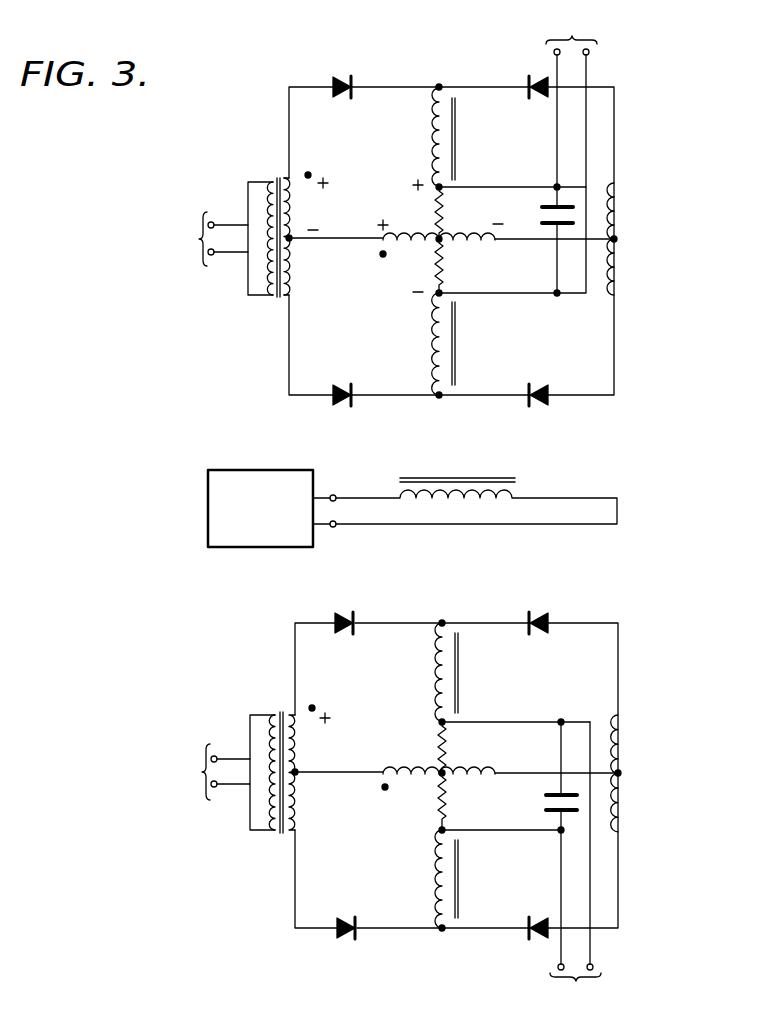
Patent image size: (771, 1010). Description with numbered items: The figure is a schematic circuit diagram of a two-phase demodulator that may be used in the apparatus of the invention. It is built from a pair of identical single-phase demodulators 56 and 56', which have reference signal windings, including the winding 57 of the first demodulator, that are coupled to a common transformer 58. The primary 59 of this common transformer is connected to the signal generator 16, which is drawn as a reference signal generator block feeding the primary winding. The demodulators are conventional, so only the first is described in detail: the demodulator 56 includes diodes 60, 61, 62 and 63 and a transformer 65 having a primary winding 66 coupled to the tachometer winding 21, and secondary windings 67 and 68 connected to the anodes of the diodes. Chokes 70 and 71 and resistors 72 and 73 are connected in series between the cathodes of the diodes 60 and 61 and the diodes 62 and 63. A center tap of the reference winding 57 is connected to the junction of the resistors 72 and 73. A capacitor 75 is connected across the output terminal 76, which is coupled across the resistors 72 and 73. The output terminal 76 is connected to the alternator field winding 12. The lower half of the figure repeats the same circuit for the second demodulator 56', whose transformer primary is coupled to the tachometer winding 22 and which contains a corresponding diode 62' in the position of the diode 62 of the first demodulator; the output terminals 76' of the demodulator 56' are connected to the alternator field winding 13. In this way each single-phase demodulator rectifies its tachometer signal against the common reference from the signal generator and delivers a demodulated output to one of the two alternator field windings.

The single-phase demodulator 56 is at (409, 241).
The single-phase demodulator 56' is at (411, 788).
The reference signal winding 57 is at (430, 239).
The common transformer 58 is at (523, 480).
The primary 59 is at (523, 491).
The diode 60 is at (344, 77).
The diode 61 is at (541, 77).
The diode 62 is at (542, 379).
The diode 62' is at (533, 916).
The diode 63 is at (345, 386).
The transformer 65 is at (283, 172).
The primary winding 66 is at (271, 296).
The secondary winding 67 is at (293, 294).
The secondary winding 68 is at (620, 200).
The choke 70 is at (458, 150).
The choke 71 is at (458, 344).
The resistor 72 is at (449, 214).
The resistor 73 is at (449, 275).
The capacitor 75 is at (556, 227).
The output terminal 76 is at (586, 111).
The output terminals 76' is at (593, 851).
The signal generator 16 is at (252, 468).
The alternator field winding 12 is at (584, 23).
The alternator field winding 13 is at (586, 993).
The tachometer winding 21 is at (111, 235).
The tachometer winding 22 is at (96, 771).